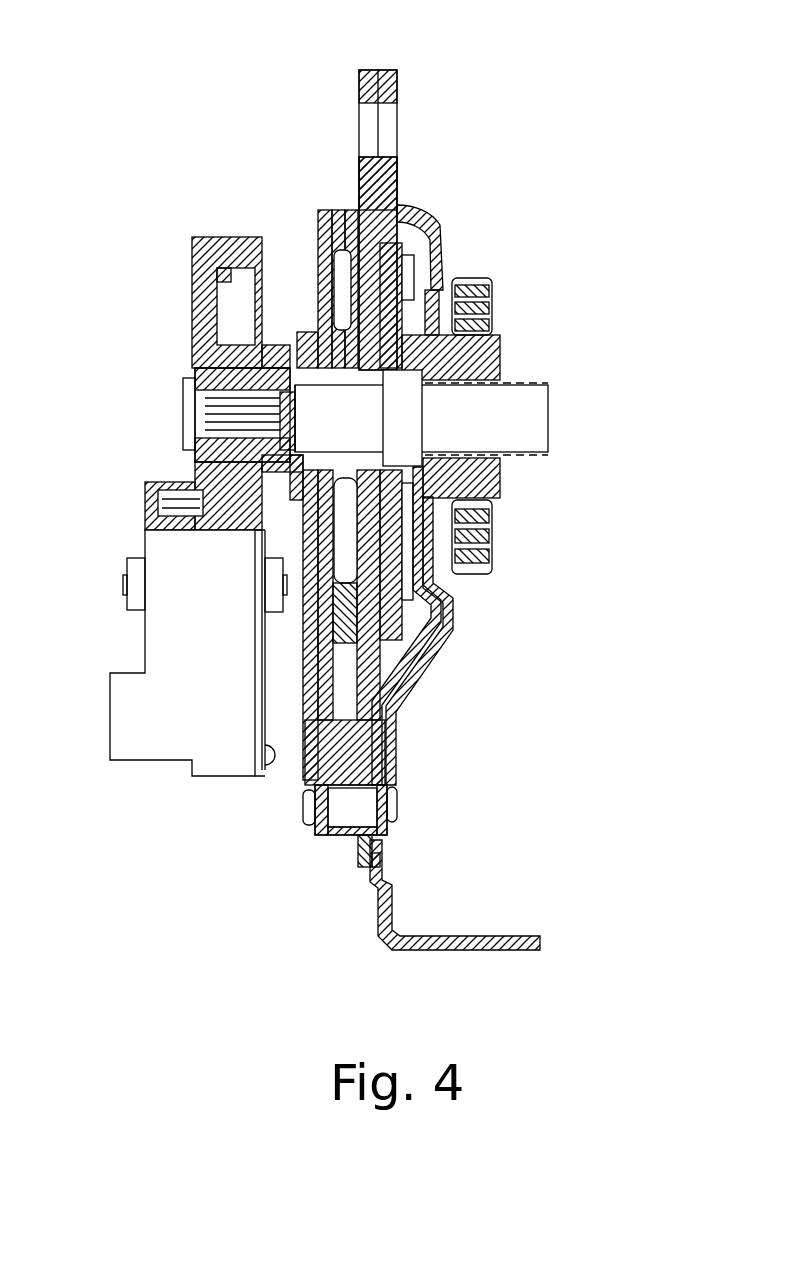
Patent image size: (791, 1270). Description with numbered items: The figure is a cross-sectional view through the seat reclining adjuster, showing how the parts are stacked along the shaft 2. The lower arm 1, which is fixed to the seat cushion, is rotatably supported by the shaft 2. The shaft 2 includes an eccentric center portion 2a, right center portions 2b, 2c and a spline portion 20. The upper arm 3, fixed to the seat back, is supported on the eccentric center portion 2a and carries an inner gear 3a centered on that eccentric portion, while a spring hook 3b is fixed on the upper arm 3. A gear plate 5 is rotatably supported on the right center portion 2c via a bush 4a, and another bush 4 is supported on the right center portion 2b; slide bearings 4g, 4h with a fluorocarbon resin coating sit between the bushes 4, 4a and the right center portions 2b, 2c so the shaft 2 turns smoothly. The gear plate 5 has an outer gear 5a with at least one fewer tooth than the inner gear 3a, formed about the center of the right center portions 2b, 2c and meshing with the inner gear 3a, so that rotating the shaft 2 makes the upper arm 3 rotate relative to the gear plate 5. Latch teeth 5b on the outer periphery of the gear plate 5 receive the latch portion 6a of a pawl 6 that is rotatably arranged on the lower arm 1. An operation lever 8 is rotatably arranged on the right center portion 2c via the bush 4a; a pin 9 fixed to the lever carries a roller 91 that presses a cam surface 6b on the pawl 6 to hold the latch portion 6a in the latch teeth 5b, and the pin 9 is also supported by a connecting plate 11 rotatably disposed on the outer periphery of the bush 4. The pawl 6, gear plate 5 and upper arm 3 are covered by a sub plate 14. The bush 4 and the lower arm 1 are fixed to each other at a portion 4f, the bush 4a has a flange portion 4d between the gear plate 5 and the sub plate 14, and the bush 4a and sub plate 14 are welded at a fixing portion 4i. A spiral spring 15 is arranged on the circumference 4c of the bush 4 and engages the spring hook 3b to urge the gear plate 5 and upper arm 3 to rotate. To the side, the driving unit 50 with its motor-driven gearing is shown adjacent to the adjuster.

The lower arm 1 is at (533, 937).
The shaft 2 is at (566, 416).
The eccentric center portion 2a is at (412, 424).
The right center portion 2b is at (432, 448).
The right center portion 2c is at (320, 432).
The upper arm 3 is at (360, 72).
The inner gear 3a is at (400, 202).
The spring hook 3b is at (397, 76).
The bush 4 is at (500, 352).
The bush 4a is at (318, 330).
The circumference 4c is at (497, 335).
The flange portion 4d is at (352, 332).
The portion 4f is at (498, 498).
The slide bearing 4g is at (542, 386).
The slide bearing 4h is at (290, 418).
The fixing portion 4i is at (340, 330).
The gear plate 5 is at (400, 650).
The outer gear 5a is at (425, 227).
The latch teeth 5b is at (400, 680).
The pawl 6 is at (303, 773).
The latch portion 6a is at (380, 730).
The cam surface 6b is at (350, 815).
The operation lever 8 is at (315, 846).
The pin 9 is at (372, 845).
The roller 91 is at (353, 833).
The connecting plate 11 is at (453, 633).
The sub plate 14 is at (312, 332).
The spiral spring 15 is at (490, 276).
The spline portion 20 is at (185, 404).
The driving unit 50 is at (172, 240).